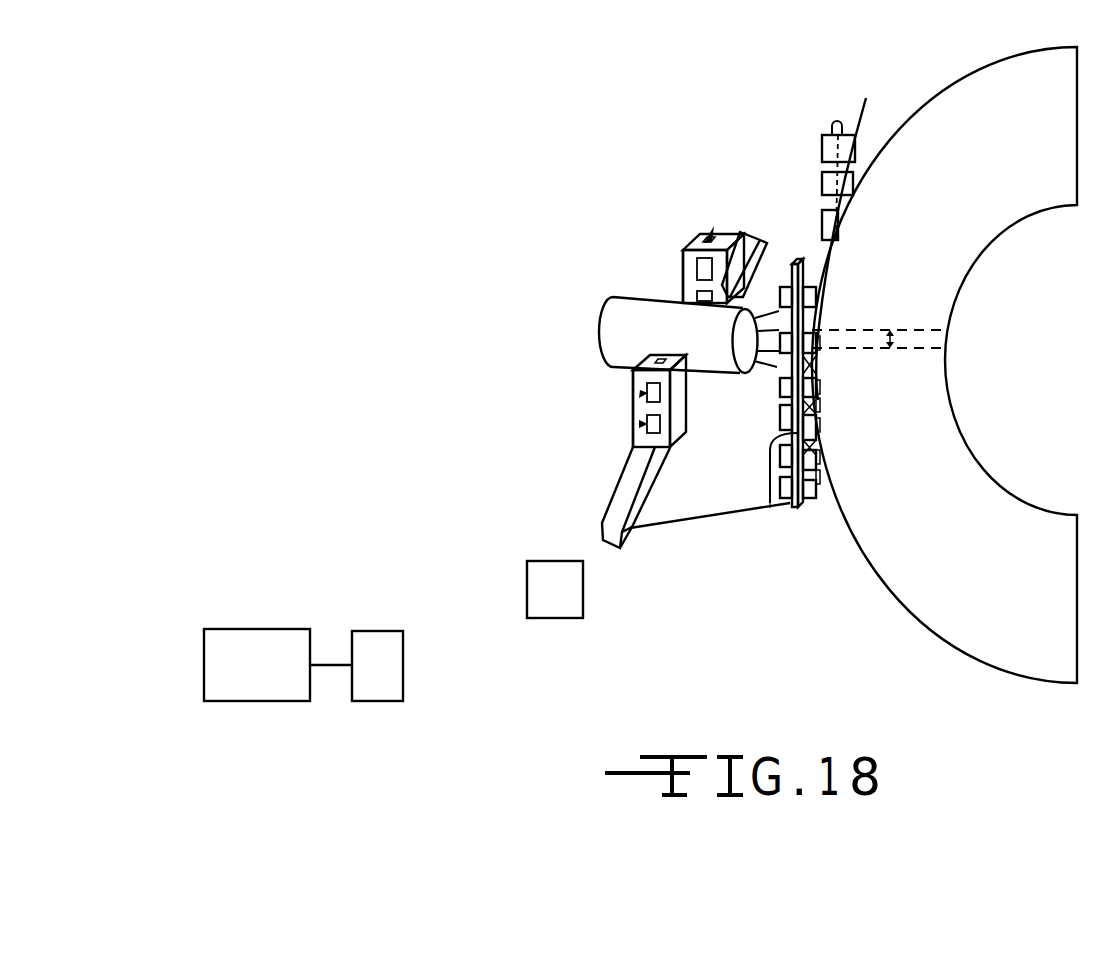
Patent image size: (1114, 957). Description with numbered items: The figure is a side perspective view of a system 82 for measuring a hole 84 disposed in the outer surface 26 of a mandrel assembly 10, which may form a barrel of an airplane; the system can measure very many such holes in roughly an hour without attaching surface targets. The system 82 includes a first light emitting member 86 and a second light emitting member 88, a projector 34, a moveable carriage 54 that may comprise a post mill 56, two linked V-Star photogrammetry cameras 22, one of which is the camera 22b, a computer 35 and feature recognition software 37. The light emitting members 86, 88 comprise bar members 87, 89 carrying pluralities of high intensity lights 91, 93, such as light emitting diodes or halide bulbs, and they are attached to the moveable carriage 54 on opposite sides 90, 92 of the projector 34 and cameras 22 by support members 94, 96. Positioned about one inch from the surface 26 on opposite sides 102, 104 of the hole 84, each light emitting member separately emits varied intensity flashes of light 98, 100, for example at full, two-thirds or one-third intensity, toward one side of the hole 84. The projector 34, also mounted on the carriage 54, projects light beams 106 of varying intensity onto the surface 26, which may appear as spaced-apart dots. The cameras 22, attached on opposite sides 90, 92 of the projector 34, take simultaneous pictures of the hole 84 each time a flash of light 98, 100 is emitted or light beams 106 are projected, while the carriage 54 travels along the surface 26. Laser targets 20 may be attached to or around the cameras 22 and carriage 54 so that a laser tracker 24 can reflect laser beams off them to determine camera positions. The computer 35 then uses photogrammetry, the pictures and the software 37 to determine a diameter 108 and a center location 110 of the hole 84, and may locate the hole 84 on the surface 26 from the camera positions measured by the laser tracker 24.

The mandrel assembly 10 is at (912, 163).
The laser targets 20 is at (709, 240).
The cameras 22 is at (554, 265).
The V-Star camera 22b is at (630, 379).
The laser tracker 24 is at (575, 587).
The outer surface 26 is at (838, 478).
The projector 34 is at (632, 322).
The computer 35 is at (224, 670).
The feature recognition software 37 is at (404, 646).
The moveable carriage 54 is at (559, 495).
The post mill 56 is at (628, 478).
The system 82 is at (475, 272).
The hole 84 is at (725, 222).
The first light emitting member 86 is at (821, 146).
The bar member 87 is at (838, 125).
The second light emitting member 88 is at (778, 370).
The bar member 89 is at (772, 421).
The side of the projector 90 is at (656, 284).
The high intensity lights 91 is at (852, 180).
The side of the projector 92 is at (628, 374).
The high intensity lights 93 is at (818, 345).
The support member 94 is at (758, 302).
The support member 96 is at (660, 530).
The flashes of light 98 is at (822, 145).
The flashes of light 100 is at (818, 396).
The side of the hole 102 is at (821, 262).
The side of the hole 104 is at (770, 503).
The light beams 106 is at (742, 320).
The diameter 108 is at (944, 345).
The center location 110 is at (788, 258).